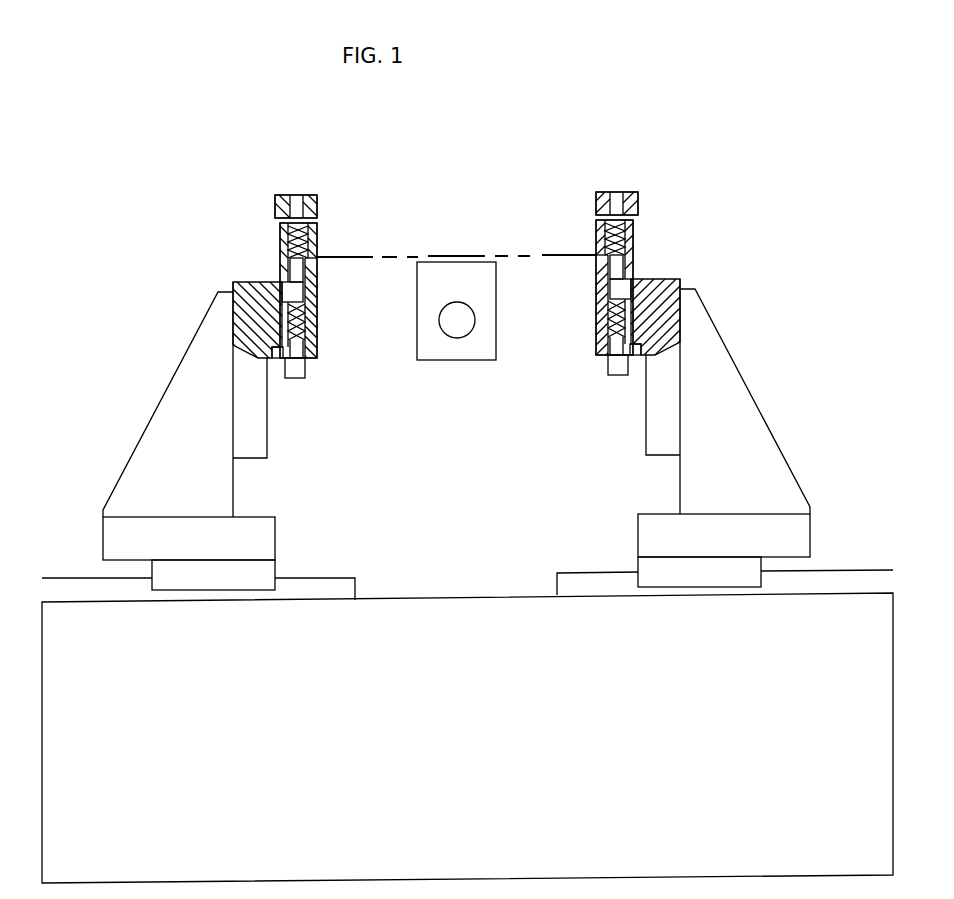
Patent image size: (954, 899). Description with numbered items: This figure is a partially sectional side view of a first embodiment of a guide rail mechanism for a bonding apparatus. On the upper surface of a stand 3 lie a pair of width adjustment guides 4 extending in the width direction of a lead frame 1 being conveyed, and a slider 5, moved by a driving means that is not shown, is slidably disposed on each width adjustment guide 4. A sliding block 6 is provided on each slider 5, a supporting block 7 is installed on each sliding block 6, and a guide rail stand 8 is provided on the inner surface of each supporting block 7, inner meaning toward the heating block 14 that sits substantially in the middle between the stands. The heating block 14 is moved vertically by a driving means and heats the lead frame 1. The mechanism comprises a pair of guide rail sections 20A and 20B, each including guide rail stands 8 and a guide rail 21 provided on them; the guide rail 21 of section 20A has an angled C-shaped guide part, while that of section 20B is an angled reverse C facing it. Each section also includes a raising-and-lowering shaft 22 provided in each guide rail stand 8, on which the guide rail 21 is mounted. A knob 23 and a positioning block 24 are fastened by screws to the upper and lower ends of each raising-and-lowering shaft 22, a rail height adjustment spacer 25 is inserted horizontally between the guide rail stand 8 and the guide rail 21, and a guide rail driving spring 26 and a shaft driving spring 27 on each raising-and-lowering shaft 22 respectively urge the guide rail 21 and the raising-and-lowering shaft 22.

The lead frame 1 is at (393, 254).
The stand 3 is at (893, 707).
The width adjustment guide 4 is at (335, 587).
The slider 5 is at (265, 573).
The sliding block 6 is at (117, 540).
The supporting block 7 is at (167, 405).
The guide rail stand 8 is at (257, 425).
The heating block 14 is at (453, 361).
The guide rail section 20A is at (256, 216).
The guide rail section 20B is at (657, 216).
The guide rail 21 is at (318, 237).
The raising-and-lowering shaft 22 is at (298, 296).
The knob 23 is at (285, 195).
The positioning block 24 is at (300, 370).
The rail height adjustment spacer 25 is at (315, 281).
The guide rail driving spring 26 is at (292, 250).
The shaft driving spring 27 is at (303, 336).